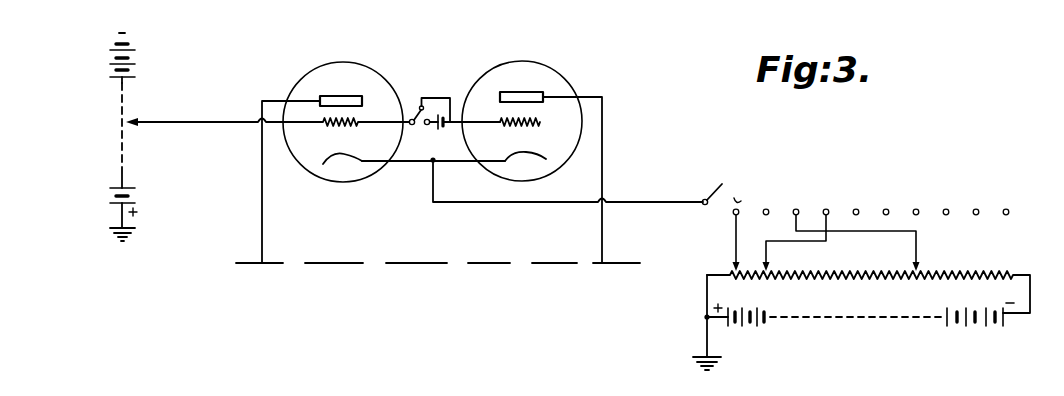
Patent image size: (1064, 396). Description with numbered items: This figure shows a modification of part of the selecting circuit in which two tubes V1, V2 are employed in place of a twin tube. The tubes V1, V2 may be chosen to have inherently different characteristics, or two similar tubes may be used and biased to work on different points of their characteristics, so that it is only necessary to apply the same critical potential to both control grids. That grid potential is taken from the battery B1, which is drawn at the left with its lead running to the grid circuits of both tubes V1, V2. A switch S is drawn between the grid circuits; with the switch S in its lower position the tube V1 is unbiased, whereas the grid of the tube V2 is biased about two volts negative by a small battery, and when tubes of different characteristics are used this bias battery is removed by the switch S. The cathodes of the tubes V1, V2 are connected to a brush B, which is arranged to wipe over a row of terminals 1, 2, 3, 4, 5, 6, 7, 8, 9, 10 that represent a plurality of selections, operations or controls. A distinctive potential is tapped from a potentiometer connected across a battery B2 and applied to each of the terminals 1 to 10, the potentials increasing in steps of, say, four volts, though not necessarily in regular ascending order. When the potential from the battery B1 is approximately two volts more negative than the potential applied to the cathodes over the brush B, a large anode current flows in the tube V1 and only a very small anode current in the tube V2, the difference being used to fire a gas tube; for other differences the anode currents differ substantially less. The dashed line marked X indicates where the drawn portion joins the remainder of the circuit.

The tube V1 is at (346, 107).
The tube V2 is at (522, 106).
The switch S is at (426, 103).
The battery B1 is at (141, 137).
The battery B2 is at (861, 320).
The brush B is at (721, 182).
The reference line X- X is at (437, 263).
The terminal 1 is at (736, 226).
The terminal 2 is at (766, 198).
The terminal 3 is at (856, 226).
The terminal 4 is at (796, 226).
The terminal 5 is at (856, 198).
The terminal 6 is at (886, 198).
The terminal 7 is at (916, 198).
The terminal 8 is at (946, 198).
The terminal 9 is at (976, 198).
The terminal 10 is at (1006, 198).